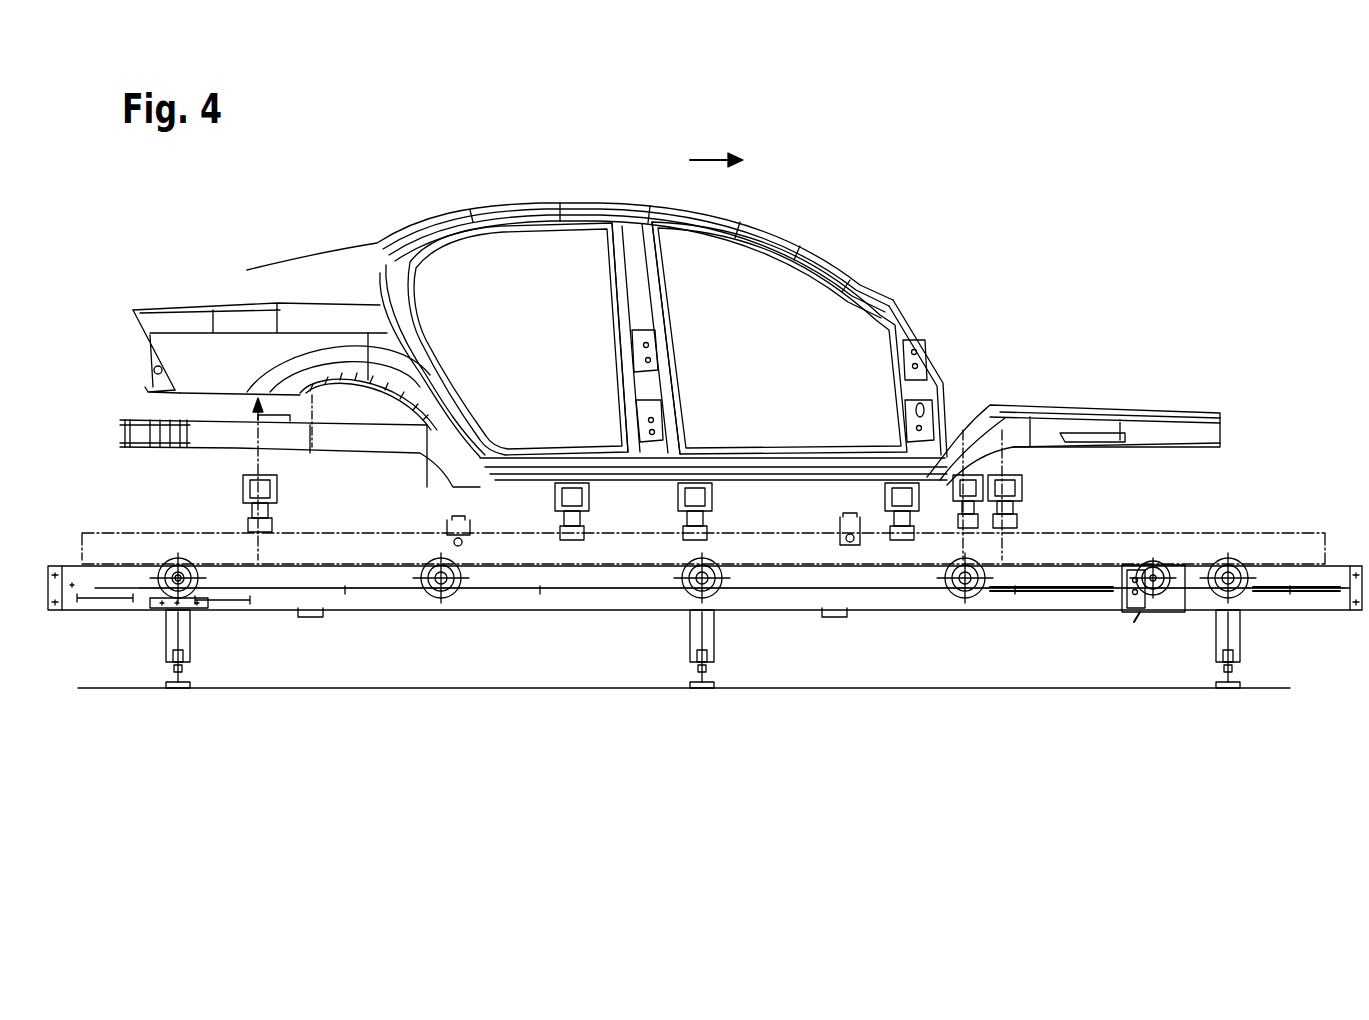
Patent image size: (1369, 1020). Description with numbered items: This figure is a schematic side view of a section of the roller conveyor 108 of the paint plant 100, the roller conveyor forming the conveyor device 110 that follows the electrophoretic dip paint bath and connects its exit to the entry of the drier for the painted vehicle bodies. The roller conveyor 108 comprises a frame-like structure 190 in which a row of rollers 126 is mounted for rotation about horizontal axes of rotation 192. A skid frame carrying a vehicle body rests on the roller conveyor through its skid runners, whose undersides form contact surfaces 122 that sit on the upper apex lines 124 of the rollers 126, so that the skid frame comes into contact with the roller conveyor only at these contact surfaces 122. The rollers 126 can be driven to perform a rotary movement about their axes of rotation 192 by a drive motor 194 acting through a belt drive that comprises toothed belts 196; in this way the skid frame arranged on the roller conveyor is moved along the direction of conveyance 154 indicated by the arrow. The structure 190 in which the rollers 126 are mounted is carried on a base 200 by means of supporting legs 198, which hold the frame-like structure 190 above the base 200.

The paint plant 100 is at (1140, 298).
The roller conveyor 108 is at (185, 708).
The conveyor device 110 is at (233, 708).
The contact surfaces 122 is at (1314, 568).
The upper apex lines 124 is at (170, 565).
The rollers 126 is at (184, 582).
The direction of conveyance 154 is at (715, 160).
The frame-like structure 190 is at (905, 592).
The axes of rotation 192 is at (177, 572).
The drive motor 194 is at (1122, 585).
The toothed belts 196 is at (362, 592).
The supporting legs 198 is at (172, 645).
The base 200 is at (418, 690).